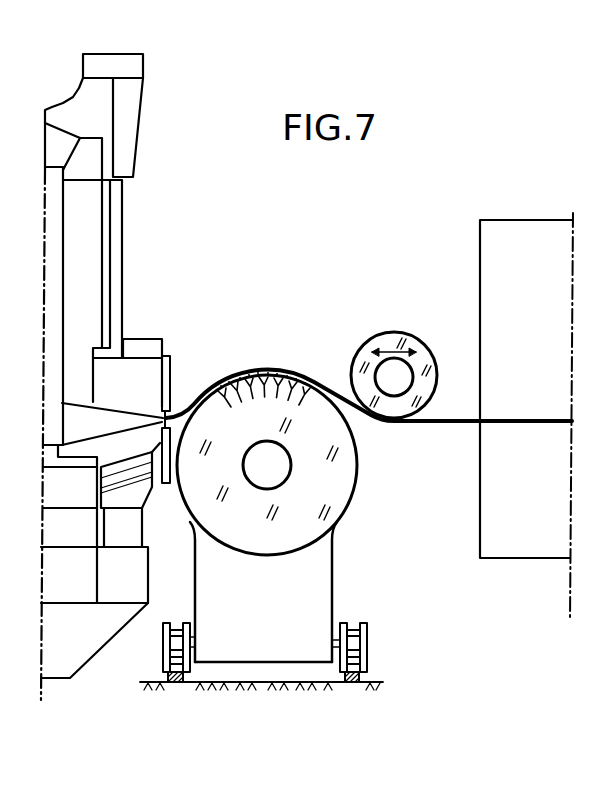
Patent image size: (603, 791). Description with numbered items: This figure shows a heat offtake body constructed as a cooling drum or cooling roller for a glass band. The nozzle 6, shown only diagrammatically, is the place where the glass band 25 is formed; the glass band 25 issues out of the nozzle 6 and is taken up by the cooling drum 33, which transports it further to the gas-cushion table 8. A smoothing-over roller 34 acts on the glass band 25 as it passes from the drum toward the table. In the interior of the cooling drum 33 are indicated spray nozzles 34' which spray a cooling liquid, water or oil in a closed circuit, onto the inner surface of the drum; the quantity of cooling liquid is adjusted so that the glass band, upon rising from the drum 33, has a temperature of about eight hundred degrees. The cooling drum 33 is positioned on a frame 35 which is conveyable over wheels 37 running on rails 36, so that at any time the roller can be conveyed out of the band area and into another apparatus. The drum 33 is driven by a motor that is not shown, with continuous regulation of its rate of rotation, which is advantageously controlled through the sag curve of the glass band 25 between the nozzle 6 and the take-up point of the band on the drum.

The nozzle 6 is at (163, 414).
The glass band 25 is at (187, 412).
The cooling drum 33 is at (288, 410).
The spray nozzles 34' is at (262, 357).
The smoothing-over roller 34 is at (394, 342).
The gas-cushion table 8 is at (517, 558).
The frame 35 is at (265, 655).
The rails 36 is at (178, 685).
The wheels 37 is at (352, 645).